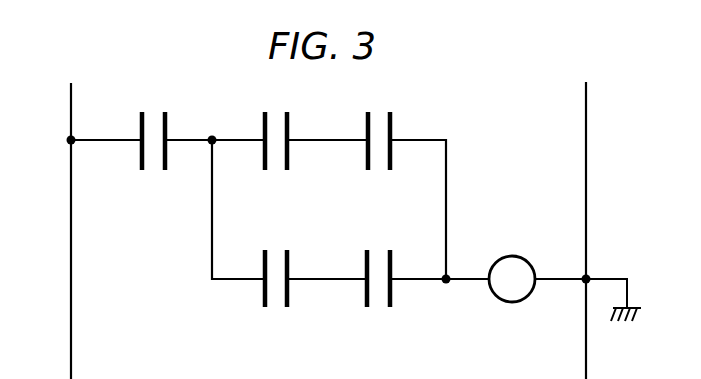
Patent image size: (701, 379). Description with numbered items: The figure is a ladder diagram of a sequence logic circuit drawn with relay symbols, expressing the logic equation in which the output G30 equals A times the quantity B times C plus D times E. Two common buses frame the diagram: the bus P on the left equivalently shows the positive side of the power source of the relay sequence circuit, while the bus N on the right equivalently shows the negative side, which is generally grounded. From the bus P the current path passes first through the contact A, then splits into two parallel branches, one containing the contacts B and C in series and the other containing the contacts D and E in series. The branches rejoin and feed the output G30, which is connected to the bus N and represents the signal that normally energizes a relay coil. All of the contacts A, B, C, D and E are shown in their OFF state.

The common bus P is at (70, 107).
The common bus N is at (586, 107).
The contact A is at (144, 129).
The contact B is at (290, 129).
The contact C is at (407, 184).
The contact D is at (289, 223).
The contact E is at (427, 267).
The output G30 is at (537, 265).